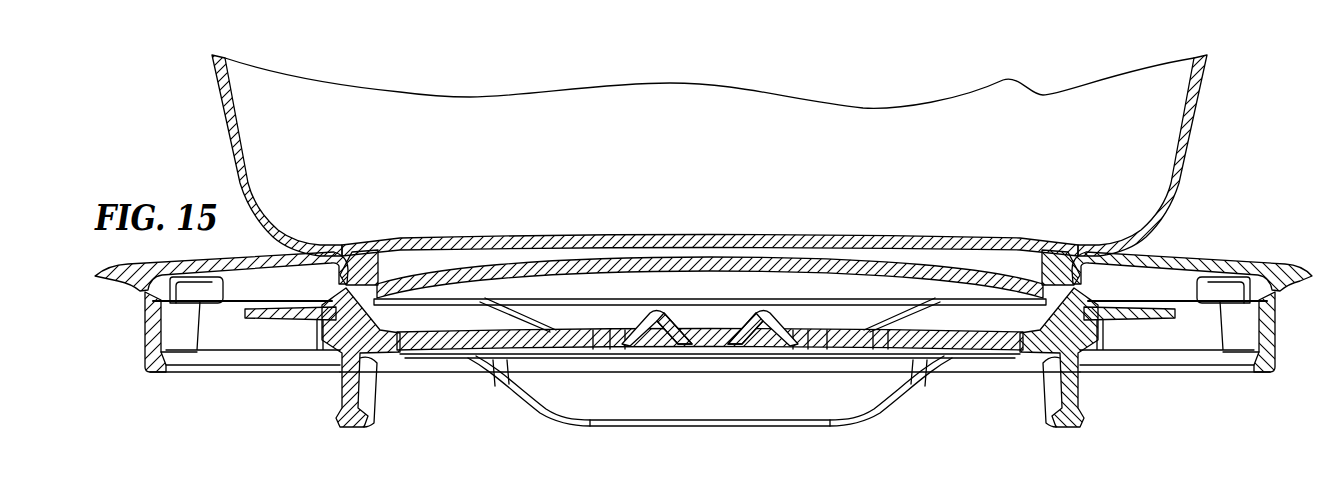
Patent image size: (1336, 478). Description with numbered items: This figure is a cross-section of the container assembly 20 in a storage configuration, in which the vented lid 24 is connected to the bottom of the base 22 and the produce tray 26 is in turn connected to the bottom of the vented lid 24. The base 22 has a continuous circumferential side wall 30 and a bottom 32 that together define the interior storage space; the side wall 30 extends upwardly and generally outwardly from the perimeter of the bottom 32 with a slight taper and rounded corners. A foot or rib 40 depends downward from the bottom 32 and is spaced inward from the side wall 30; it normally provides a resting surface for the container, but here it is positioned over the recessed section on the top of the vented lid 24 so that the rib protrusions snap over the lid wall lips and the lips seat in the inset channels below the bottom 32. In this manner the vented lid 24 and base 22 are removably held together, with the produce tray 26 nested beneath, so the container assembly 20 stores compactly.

The container assembly 20 is at (168, 113).
The base 22 is at (1221, 128).
The vented lid 24 is at (1211, 384).
The produce tray 26 is at (321, 391).
The side wall 30 is at (893, 148).
The bottom 32 is at (492, 239).
The foot or rib 40 is at (1033, 265).